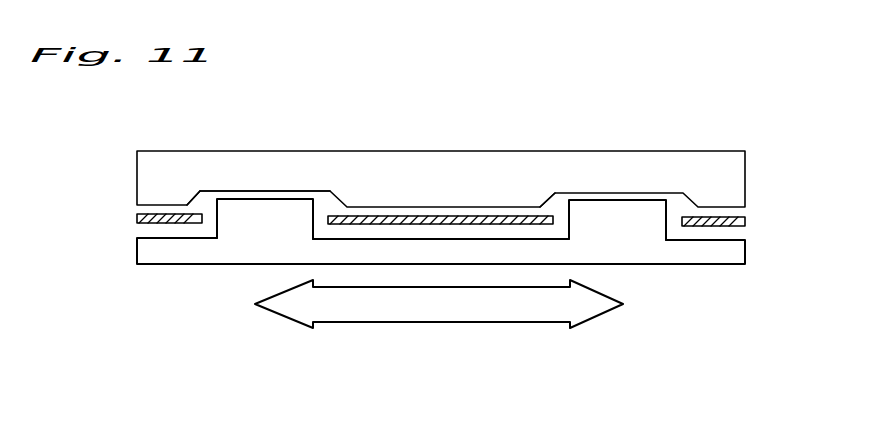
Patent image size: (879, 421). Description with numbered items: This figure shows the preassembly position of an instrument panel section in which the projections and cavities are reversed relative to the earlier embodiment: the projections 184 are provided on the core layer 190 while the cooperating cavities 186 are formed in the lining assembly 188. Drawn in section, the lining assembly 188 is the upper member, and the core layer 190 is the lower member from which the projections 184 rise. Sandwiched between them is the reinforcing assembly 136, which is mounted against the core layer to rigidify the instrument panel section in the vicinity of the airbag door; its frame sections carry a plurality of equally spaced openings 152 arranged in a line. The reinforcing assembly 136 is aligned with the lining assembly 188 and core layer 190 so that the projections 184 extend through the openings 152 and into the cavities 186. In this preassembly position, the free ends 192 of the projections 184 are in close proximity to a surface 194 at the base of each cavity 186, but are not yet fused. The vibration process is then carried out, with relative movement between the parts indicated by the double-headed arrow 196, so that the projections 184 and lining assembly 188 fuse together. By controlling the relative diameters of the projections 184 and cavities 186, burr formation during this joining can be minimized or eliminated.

The lining assembly 188 is at (620, 175).
The core layer 190 is at (746, 253).
The projections 184 is at (265, 218).
The cavities 186 is at (201, 200).
The free ends 192 is at (277, 197).
The openings 152 is at (328, 222).
The surface 194 is at (202, 190).
The reinforcing assembly 136 is at (757, 225).
The double-headed arrow 196 is at (457, 308).